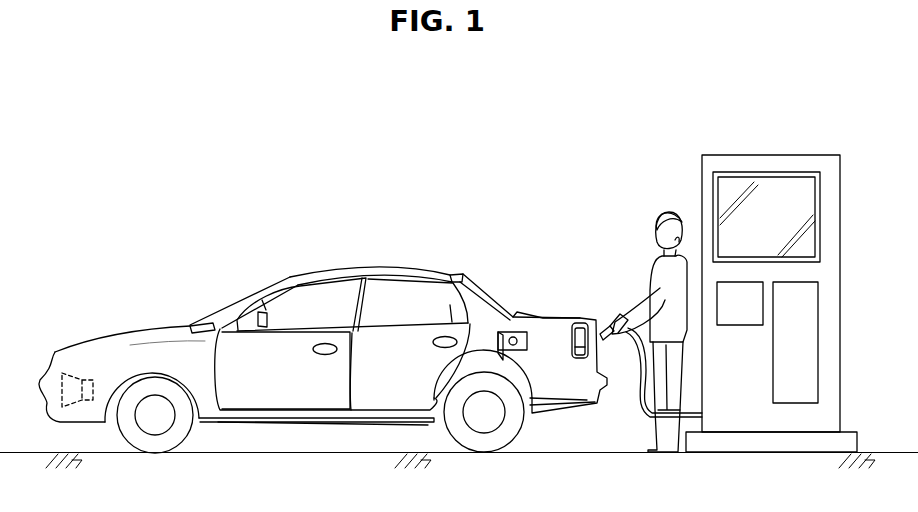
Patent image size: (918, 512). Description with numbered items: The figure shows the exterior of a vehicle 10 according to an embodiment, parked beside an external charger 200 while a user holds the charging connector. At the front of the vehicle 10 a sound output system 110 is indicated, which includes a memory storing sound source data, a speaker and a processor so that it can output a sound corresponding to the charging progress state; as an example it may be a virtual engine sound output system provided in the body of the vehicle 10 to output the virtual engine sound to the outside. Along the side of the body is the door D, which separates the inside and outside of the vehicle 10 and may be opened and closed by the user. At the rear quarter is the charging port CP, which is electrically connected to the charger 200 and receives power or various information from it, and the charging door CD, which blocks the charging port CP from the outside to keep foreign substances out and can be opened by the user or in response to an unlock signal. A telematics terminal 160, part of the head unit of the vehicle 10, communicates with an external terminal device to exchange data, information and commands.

The vehicle 10 is at (297, 264).
The sound output system 110 is at (80, 378).
The telematics terminal 160 is at (262, 300).
The door D is at (292, 397).
The charging door CD is at (497, 333).
The charging port CP is at (514, 337).
The charger 200 is at (613, 318).